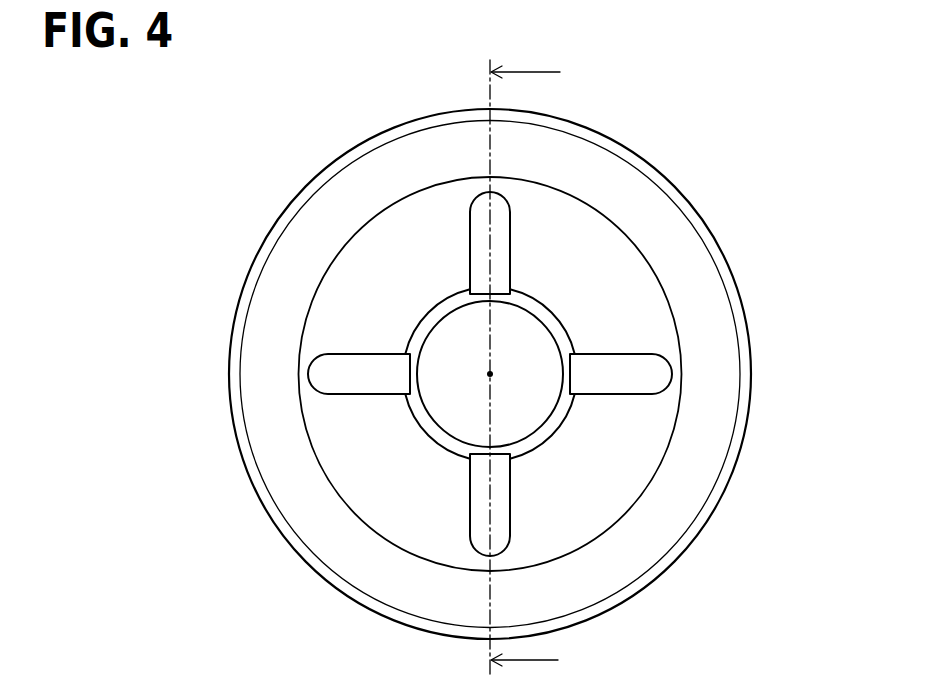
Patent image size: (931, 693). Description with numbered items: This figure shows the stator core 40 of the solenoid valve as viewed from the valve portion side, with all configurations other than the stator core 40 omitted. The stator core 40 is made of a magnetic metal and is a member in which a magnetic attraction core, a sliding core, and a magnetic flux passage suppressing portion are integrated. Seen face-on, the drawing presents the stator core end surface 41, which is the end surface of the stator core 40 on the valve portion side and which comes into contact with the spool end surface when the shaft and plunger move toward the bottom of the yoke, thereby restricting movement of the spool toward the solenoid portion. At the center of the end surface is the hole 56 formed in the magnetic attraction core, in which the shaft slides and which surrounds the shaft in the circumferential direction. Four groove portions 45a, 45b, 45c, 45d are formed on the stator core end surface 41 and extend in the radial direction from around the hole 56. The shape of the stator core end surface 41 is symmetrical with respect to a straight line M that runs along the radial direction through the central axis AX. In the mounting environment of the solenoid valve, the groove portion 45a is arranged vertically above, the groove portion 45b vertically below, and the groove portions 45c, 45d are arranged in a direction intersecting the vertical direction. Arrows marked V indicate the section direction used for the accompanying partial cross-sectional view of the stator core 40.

The stator core 40 is at (302, 180).
The stator core end surface 41 is at (412, 532).
The groove portion 45a is at (485, 213).
The groove portion 45b is at (480, 537).
The groove portion 45c is at (657, 374).
The groove portion 45d is at (325, 372).
The hole 56 is at (439, 440).
The central axis AX is at (498, 382).
The straight line M is at (491, 352).
The section line V is at (538, 369).